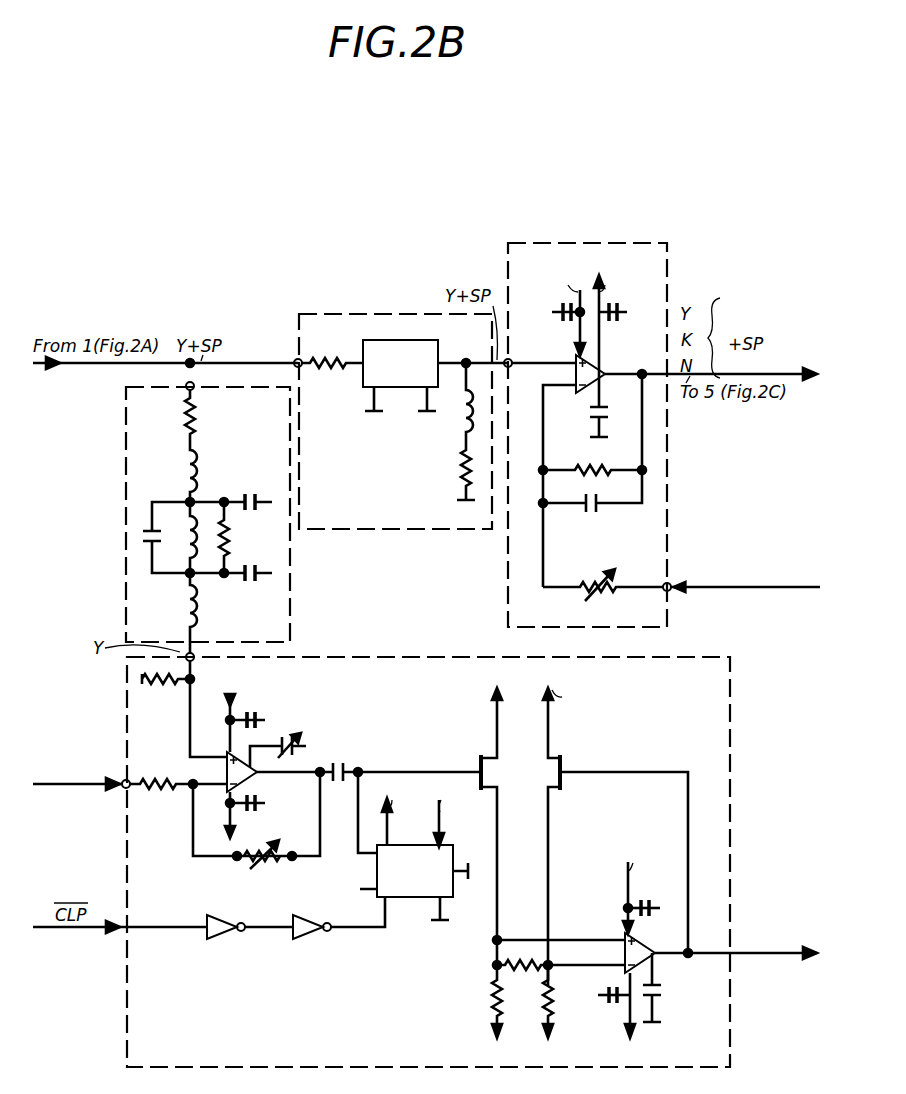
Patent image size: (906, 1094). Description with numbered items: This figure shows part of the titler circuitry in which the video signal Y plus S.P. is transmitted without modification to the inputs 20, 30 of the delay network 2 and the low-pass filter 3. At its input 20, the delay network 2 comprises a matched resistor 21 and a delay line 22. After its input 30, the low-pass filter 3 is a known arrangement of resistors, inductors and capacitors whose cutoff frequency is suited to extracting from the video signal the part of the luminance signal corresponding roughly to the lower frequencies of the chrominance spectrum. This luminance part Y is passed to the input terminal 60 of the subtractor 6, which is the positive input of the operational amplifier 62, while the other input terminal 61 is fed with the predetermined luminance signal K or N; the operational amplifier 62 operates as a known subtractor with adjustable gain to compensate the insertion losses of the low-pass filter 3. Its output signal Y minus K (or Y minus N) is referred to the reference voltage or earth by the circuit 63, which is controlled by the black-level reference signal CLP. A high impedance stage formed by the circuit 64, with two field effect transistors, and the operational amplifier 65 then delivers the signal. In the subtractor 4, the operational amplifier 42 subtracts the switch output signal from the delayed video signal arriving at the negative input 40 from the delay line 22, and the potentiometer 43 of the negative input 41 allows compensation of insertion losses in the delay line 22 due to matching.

The delay network 2 is at (385, 316).
The low-pass filter 3 is at (126, 540).
The subtractor 4 is at (578, 243).
The subtractor 6 is at (712, 657).
The input 20 is at (294, 360).
The matched resistor 21 is at (332, 350).
The delay line 22 is at (435, 420).
The input 30 is at (194, 388).
The negative input 40 is at (510, 359).
The negative input 41 is at (671, 591).
The operational amplifier 42 is at (606, 368).
The potentiometer 43 is at (592, 577).
The input terminal 60 is at (196, 660).
The input terminal 61 is at (124, 780).
The operational amplifier 62 is at (226, 766).
The circuit 63 is at (402, 849).
The circuit 64 is at (518, 766).
The operational amplifier 65 is at (651, 942).